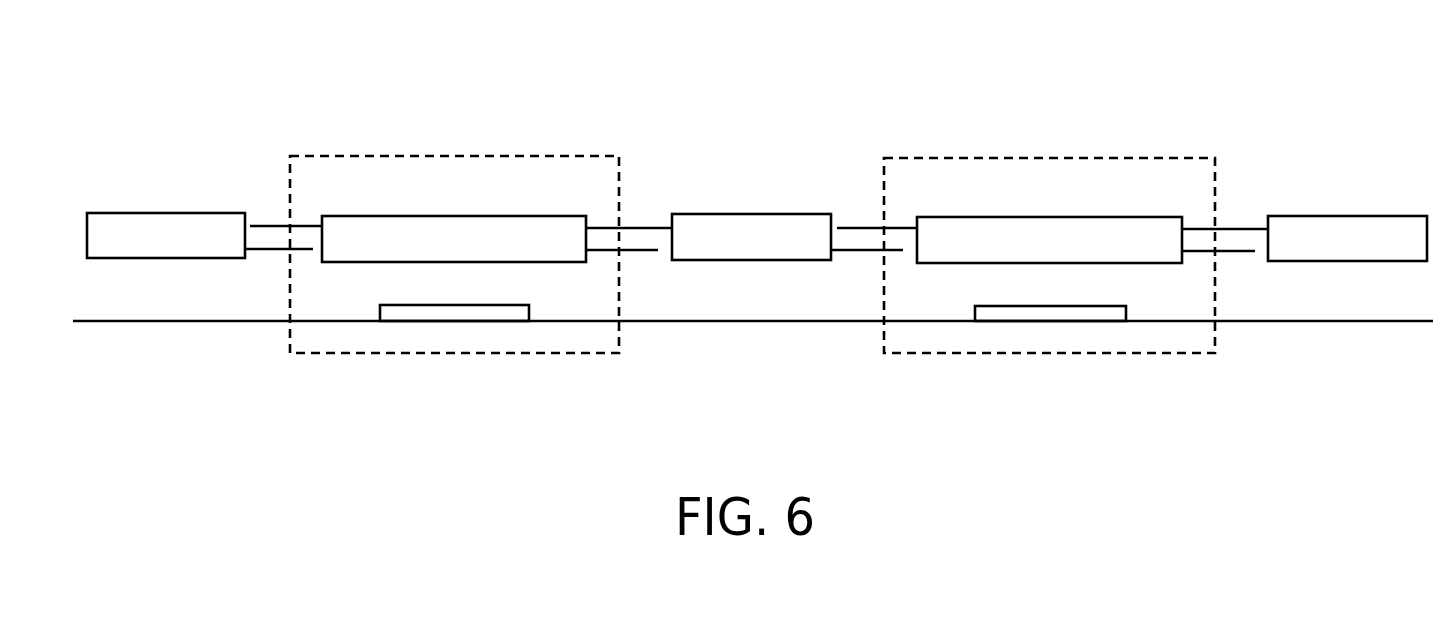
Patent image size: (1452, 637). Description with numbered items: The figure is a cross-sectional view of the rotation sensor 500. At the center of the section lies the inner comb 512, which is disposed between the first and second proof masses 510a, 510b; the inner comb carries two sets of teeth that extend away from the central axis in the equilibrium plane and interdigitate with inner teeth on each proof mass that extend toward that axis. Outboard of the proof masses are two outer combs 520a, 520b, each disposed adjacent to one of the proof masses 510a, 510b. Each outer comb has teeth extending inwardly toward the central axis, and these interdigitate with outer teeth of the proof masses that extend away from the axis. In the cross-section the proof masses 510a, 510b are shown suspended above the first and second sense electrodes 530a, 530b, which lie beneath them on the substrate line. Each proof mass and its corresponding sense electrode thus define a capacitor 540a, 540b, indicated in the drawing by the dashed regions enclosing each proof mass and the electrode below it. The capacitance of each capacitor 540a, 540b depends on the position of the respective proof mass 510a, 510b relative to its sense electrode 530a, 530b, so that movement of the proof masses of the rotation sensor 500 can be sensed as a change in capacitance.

The rotation sensor 500 is at (812, 83).
The first outer comb 520a is at (207, 212).
The second outer comb 520b is at (1365, 215).
The first capacitor 540a is at (377, 154).
The second capacitor 540b is at (980, 157).
The first proof mass 510a is at (447, 215).
The second proof mass 510b is at (1050, 216).
The first sense electrode 530a is at (478, 322).
The second sense electrode 530b is at (1092, 322).
The inner comb 512 is at (739, 206).